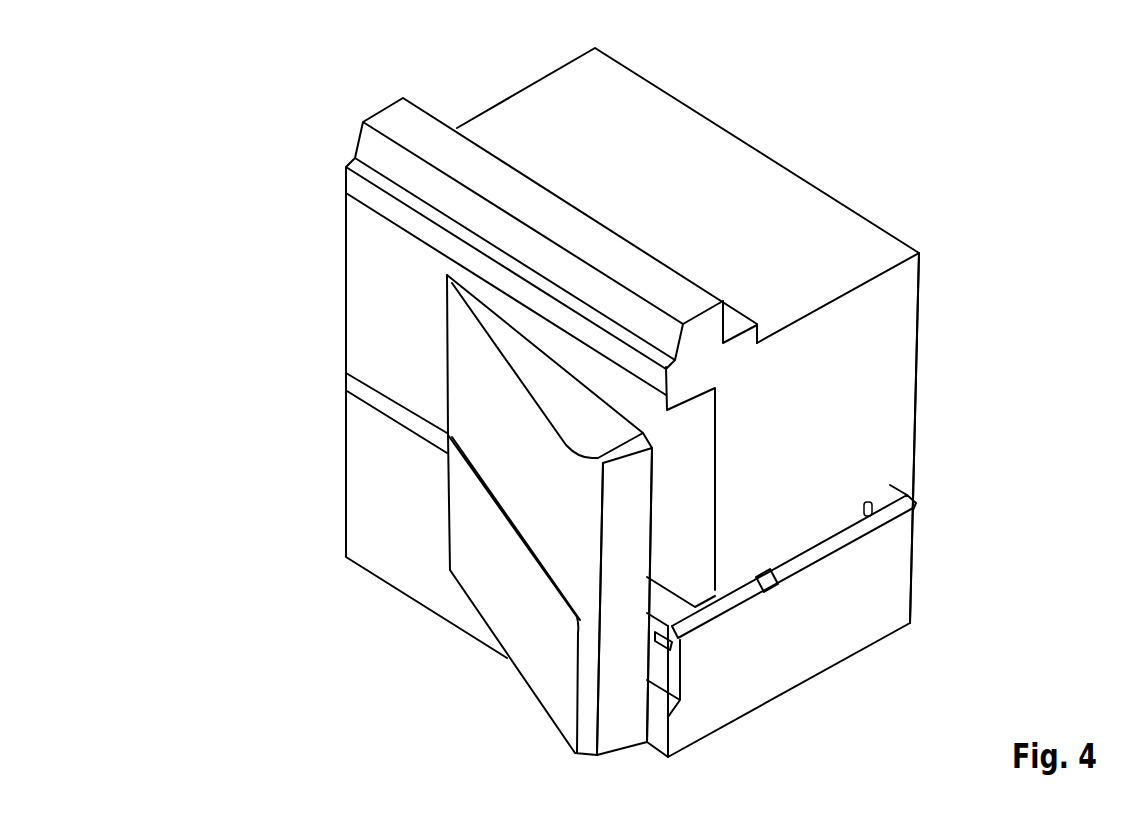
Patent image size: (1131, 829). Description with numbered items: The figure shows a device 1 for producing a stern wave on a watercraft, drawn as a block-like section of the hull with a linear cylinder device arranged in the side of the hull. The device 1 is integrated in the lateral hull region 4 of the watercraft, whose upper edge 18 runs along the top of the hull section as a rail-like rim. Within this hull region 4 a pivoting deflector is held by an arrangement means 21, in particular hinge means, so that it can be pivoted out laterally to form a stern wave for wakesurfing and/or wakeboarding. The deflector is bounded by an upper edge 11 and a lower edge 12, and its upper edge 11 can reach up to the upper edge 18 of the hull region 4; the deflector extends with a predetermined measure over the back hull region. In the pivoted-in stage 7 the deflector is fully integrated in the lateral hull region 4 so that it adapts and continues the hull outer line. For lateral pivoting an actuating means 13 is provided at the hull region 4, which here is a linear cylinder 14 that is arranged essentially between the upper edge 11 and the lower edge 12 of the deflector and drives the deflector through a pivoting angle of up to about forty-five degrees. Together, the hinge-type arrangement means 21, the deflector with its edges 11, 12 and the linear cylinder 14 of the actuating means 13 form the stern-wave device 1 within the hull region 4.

The device 1 is at (785, 151).
The lateral hull region 4 is at (924, 309).
The pivoted-in stage 7 is at (628, 751).
The upper edge 11 is at (530, 410).
The lower edge 12 is at (474, 630).
The actuating means 13 is at (851, 652).
The linear cylinder 14 is at (844, 560).
The upper edge of the hull region 18 is at (323, 175).
The arrangement means 21 is at (434, 471).